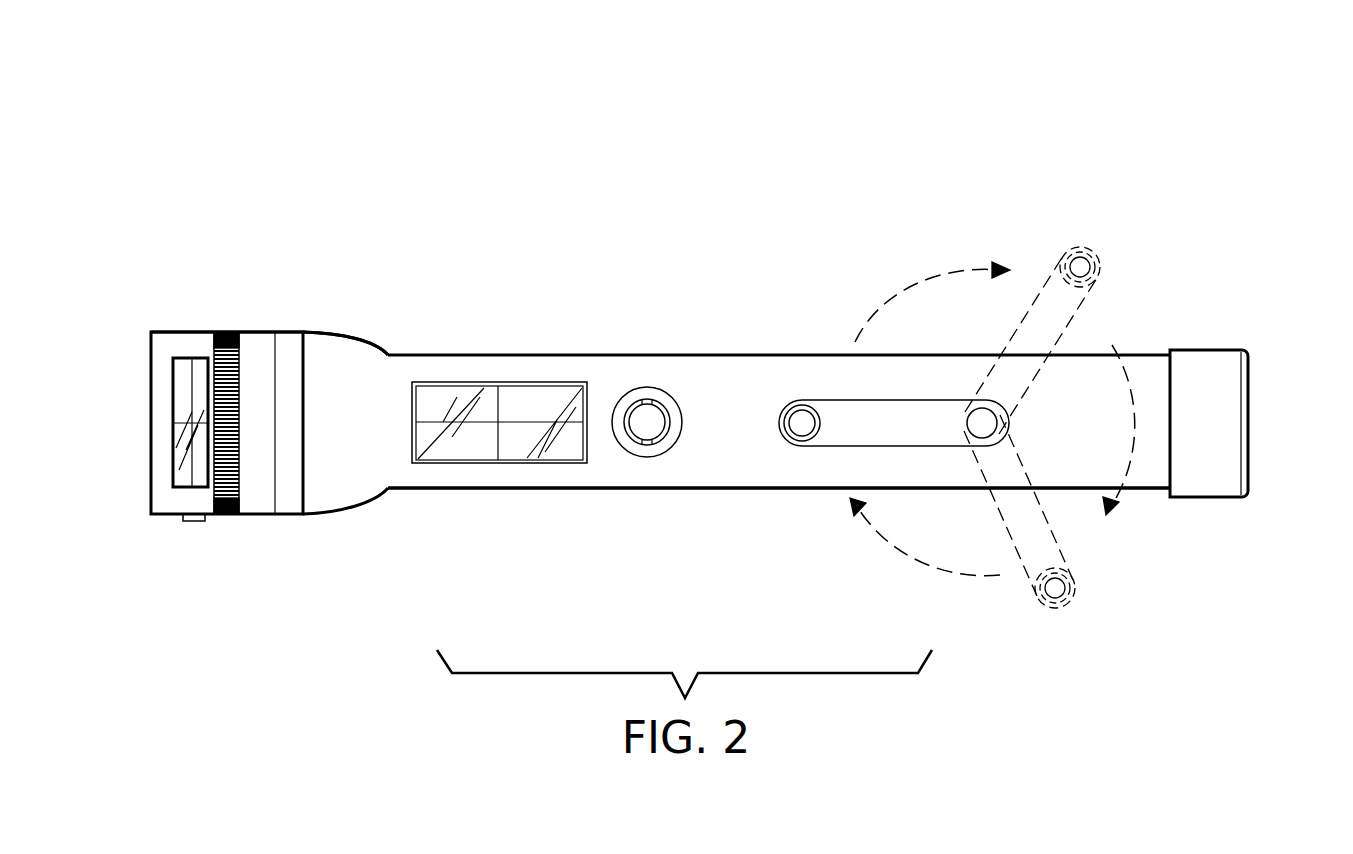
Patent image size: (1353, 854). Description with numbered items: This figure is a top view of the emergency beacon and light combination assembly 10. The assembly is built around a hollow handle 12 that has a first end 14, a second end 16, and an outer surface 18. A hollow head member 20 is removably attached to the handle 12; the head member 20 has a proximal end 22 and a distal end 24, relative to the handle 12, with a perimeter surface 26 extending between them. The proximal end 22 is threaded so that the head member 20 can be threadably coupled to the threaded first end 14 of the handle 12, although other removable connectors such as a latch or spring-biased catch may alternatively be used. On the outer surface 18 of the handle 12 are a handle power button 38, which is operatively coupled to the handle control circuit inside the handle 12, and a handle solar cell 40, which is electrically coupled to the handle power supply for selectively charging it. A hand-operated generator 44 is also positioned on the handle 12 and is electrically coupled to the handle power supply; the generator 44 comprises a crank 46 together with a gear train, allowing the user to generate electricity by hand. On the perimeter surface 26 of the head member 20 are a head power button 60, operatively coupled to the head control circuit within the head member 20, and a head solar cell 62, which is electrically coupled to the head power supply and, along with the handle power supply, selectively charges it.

The emergency beacon and light combination assembly 10 is at (1195, 151).
The hollow handle 12 is at (715, 367).
The first end 14 is at (275, 369).
The second end 16 is at (1249, 420).
The outer surface 18 is at (744, 457).
The head member 20 is at (254, 500).
The proximal end 22 is at (273, 483).
The distal end 24 is at (150, 430).
The perimeter surface 26 is at (178, 340).
The handle power button 38 is at (640, 418).
The handle solar cell 40 is at (515, 447).
The generator 44 is at (845, 450).
The crank 46 is at (832, 415).
The head power button 60 is at (185, 521).
The head solar cell 62 is at (180, 380).